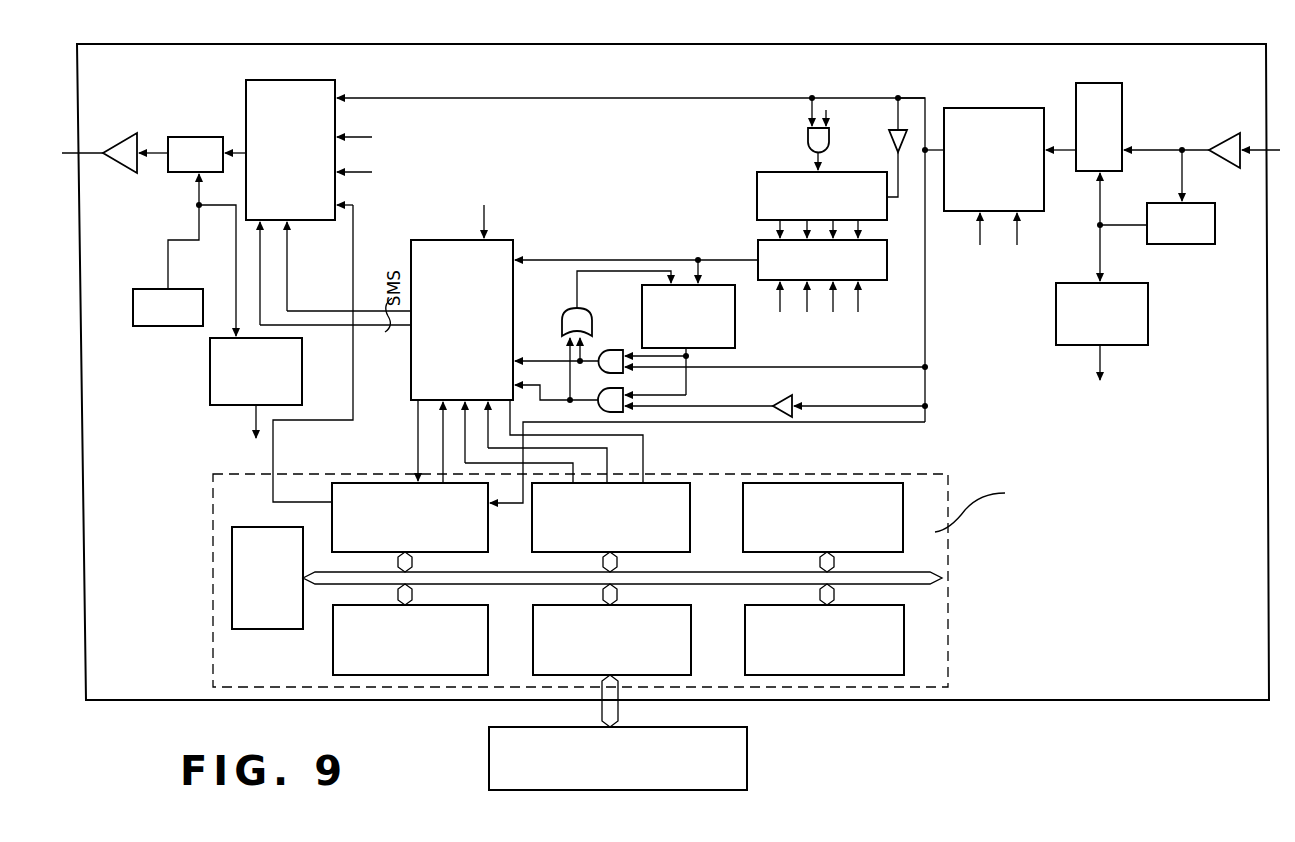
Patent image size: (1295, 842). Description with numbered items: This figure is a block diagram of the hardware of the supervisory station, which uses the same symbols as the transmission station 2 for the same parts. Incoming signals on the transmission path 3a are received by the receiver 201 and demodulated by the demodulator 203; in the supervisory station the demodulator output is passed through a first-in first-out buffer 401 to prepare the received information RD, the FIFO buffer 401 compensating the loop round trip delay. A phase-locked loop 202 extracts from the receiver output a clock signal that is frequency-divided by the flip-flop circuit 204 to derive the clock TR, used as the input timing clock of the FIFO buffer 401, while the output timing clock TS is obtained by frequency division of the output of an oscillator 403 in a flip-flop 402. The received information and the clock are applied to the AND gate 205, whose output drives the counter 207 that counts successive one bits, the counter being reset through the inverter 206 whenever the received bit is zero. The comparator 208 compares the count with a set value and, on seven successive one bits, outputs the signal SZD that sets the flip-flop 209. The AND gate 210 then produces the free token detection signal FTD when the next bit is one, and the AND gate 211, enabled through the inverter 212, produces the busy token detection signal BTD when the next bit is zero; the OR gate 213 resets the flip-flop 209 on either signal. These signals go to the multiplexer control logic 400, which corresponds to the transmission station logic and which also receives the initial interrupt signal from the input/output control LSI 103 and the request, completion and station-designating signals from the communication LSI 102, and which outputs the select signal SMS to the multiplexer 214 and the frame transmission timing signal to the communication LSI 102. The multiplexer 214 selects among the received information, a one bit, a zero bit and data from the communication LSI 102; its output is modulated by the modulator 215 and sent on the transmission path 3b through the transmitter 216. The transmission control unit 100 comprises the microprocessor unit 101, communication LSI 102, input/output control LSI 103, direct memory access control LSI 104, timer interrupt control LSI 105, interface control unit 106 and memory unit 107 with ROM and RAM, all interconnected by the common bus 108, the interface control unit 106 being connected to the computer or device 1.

The computer or device 1 is at (747, 765).
The transmission station 2 is at (977, 700).
The transmission path 3a is at (1275, 152).
The transmission path 3b is at (72, 155).
The transmission control unit 100 is at (1070, 598).
The microprocessor unit 101 is at (260, 527).
The communication LSI 102 is at (368, 483).
The input/output control LSI 103 is at (692, 510).
The direct memory access control LSI 104 is at (903, 500).
The timer interrupt control LSI 105 is at (333, 640).
The interface control unit 106 is at (691, 623).
The memory unit 107 is at (904, 663).
The common bus 108 is at (922, 572).
The receiver 201 is at (1220, 140).
The phase-locked loop 202 is at (1185, 244).
The demodulator 203 is at (1076, 100).
The flip-flop circuit 204 is at (1056, 318).
The AND gate 205 is at (808, 138).
The inverter 206 is at (889, 132).
The counter 207 is at (757, 197).
The comparator 208 is at (887, 262).
The flip-flop 209 is at (735, 318).
The AND gate 210 is at (613, 350).
The AND gate 211 is at (620, 412).
The inverter 212 is at (795, 398).
The OR gate 213 is at (563, 320).
The multiplexer 214 is at (318, 58).
The modulator 215 is at (195, 137).
The transmitter 216 is at (137, 168).
The multiplexer control logic 400 is at (512, 240).
The FIFO buffer 401 is at (983, 108).
The flip-flop 402 is at (210, 390).
The oscillator 403 is at (148, 326).